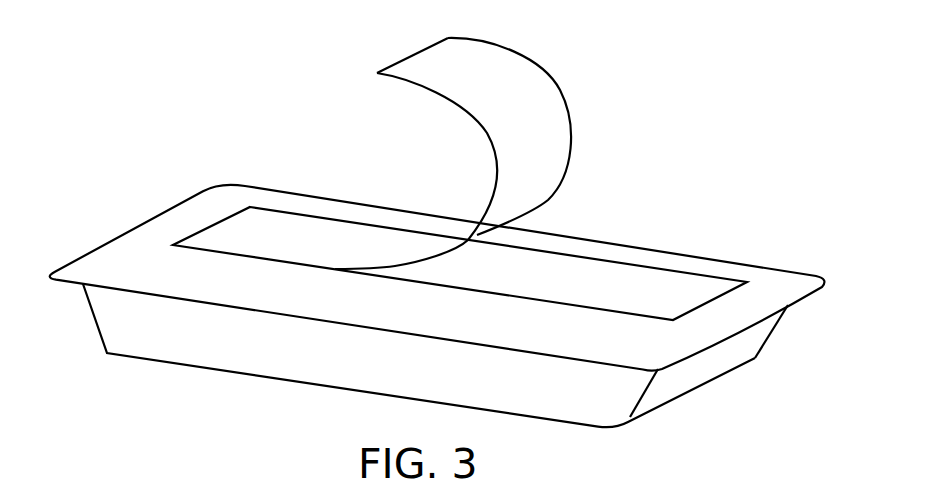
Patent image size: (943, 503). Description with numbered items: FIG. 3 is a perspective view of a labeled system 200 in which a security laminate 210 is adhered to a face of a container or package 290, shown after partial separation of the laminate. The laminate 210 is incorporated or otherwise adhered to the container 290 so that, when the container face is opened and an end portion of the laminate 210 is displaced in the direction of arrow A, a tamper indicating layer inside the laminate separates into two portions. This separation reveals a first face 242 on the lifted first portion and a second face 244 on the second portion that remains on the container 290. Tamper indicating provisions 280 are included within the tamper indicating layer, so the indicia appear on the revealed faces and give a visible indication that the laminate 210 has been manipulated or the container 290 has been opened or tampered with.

The labeled system 200 is at (749, 92).
The security laminate 210 is at (263, 237).
The first face 242 is at (440, 50).
The second face 244 is at (713, 290).
The tamper indicating provisions 280 is at (555, 107).
The container 290 is at (121, 269).